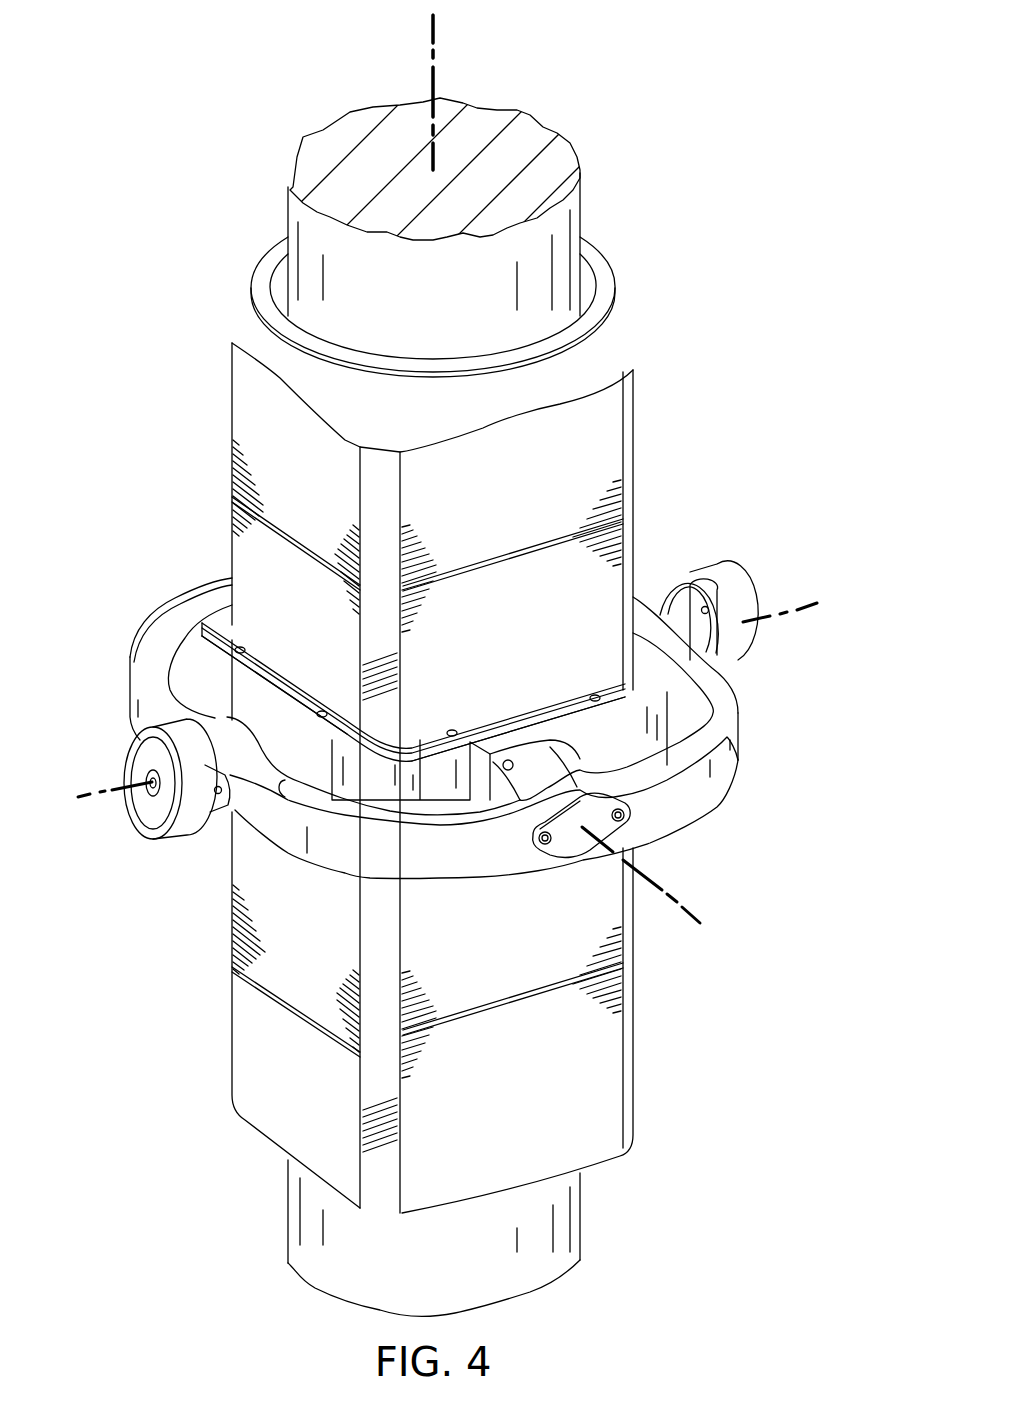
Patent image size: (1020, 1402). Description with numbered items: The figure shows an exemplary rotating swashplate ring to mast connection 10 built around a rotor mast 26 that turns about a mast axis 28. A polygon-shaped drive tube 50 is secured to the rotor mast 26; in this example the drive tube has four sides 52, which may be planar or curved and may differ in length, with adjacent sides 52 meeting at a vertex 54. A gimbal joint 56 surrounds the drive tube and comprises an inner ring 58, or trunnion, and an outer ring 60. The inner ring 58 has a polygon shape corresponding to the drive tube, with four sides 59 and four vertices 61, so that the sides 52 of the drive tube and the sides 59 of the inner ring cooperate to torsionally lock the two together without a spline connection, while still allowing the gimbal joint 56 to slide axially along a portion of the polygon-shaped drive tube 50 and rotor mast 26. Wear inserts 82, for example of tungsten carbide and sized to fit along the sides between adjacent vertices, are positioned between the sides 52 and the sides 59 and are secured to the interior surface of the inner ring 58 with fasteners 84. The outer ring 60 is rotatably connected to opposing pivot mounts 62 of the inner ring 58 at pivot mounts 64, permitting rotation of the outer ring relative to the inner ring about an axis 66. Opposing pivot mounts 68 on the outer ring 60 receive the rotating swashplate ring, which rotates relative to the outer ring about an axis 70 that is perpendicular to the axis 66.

The rotating swashplate ring to mast connection 10 is at (640, 64).
The rotor mast 26 is at (287, 218).
The mast axis 28 is at (436, 87).
The polygon-shaped drive tube 50 is at (232, 372).
The sides 52 is at (243, 1017).
The vertex 54 is at (382, 1204).
The gimbal joint 56 is at (685, 507).
The inner ring 58 is at (613, 700).
The sides 59 is at (305, 728).
The outer ring 60 is at (320, 868).
The vertices 61 is at (413, 765).
The pivot mounts 62 is at (548, 745).
The pivot mounts 64 is at (563, 847).
The axis 66 is at (693, 912).
The pivot mounts 68 is at (125, 747).
The axis 70 is at (102, 771).
The wear inserts 82 is at (285, 660).
The fasteners 84 is at (240, 645).